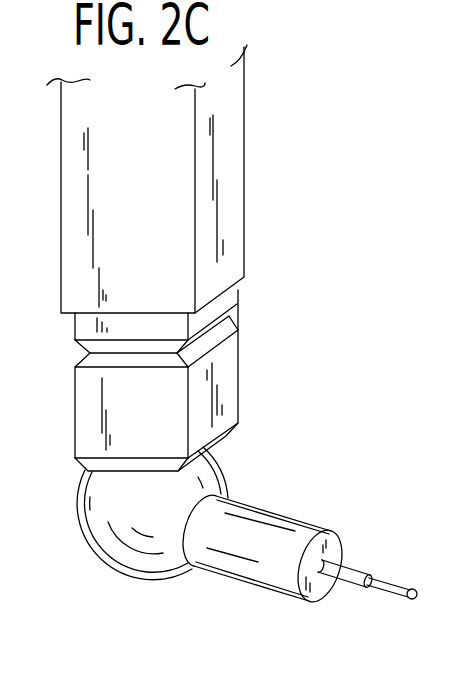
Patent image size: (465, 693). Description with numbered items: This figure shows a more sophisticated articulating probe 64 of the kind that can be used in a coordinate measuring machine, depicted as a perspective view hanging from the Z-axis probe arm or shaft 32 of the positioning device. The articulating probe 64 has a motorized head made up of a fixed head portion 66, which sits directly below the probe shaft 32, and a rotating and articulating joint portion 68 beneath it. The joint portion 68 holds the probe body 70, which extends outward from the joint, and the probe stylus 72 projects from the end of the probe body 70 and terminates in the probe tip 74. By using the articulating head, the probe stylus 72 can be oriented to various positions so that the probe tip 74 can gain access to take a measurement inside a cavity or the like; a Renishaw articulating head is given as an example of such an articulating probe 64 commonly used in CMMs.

The Z-axis probe arm or shaft 32 is at (231, 158).
The articulating probe 64 is at (258, 454).
The fixed head portion 66 is at (230, 376).
The rotating and articulating joint portion 68 is at (112, 507).
The probe body 70 is at (257, 528).
The probe stylus 72 is at (350, 572).
The probe tip 74 is at (414, 589).